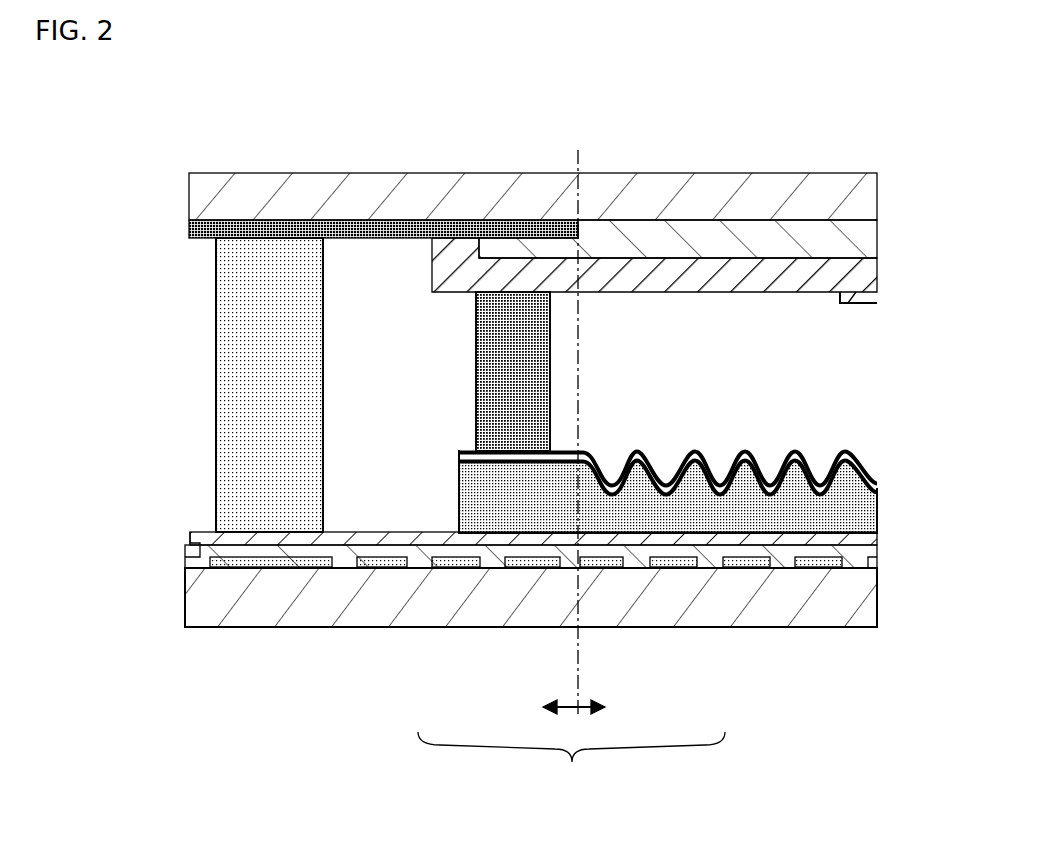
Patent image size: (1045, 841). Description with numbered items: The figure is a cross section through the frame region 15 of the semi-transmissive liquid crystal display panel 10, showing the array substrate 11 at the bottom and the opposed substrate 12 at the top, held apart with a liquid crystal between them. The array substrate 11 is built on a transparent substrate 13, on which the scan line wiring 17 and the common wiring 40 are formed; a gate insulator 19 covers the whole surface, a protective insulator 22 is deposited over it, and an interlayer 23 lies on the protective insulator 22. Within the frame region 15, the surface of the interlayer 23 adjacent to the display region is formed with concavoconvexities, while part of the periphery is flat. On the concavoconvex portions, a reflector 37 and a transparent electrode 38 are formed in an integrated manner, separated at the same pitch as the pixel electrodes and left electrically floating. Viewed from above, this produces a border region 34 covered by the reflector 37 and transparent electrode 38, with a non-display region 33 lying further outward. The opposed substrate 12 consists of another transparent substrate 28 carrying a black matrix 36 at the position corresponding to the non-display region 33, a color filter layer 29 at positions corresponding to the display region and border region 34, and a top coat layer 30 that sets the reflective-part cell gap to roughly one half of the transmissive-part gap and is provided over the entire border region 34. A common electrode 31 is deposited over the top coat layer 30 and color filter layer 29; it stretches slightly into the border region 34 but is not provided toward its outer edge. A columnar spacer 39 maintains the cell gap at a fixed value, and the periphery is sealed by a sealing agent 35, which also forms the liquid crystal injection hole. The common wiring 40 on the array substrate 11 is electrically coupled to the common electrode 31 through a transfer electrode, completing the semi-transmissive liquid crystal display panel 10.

The semi-transmissive liquid crystal display panel 10 is at (142, 180).
The array substrate 11 is at (900, 463).
The opposed substrate 12 is at (900, 175).
The transparent substrate 13 is at (875, 596).
The frame region 15 is at (571, 767).
The scan line wiring 17 is at (745, 565).
The gate insulator 19 is at (635, 548).
The protective insulator 22 is at (420, 540).
The interlayer 23 is at (851, 527).
The transparent substrate 28 is at (612, 192).
The color filter layer 29 is at (662, 245).
The top coat layer 30 is at (717, 268).
The common electrode 31 is at (863, 297).
The non-display region 33 is at (408, 707).
The border region 34 is at (726, 707).
The sealing agent 35 is at (253, 352).
The black matrix 36 is at (398, 230).
The reflector 37 is at (677, 480).
The transparent electrode 38 is at (797, 449).
The columnar spacer 39 is at (498, 385).
The common wiring 40 is at (262, 560).